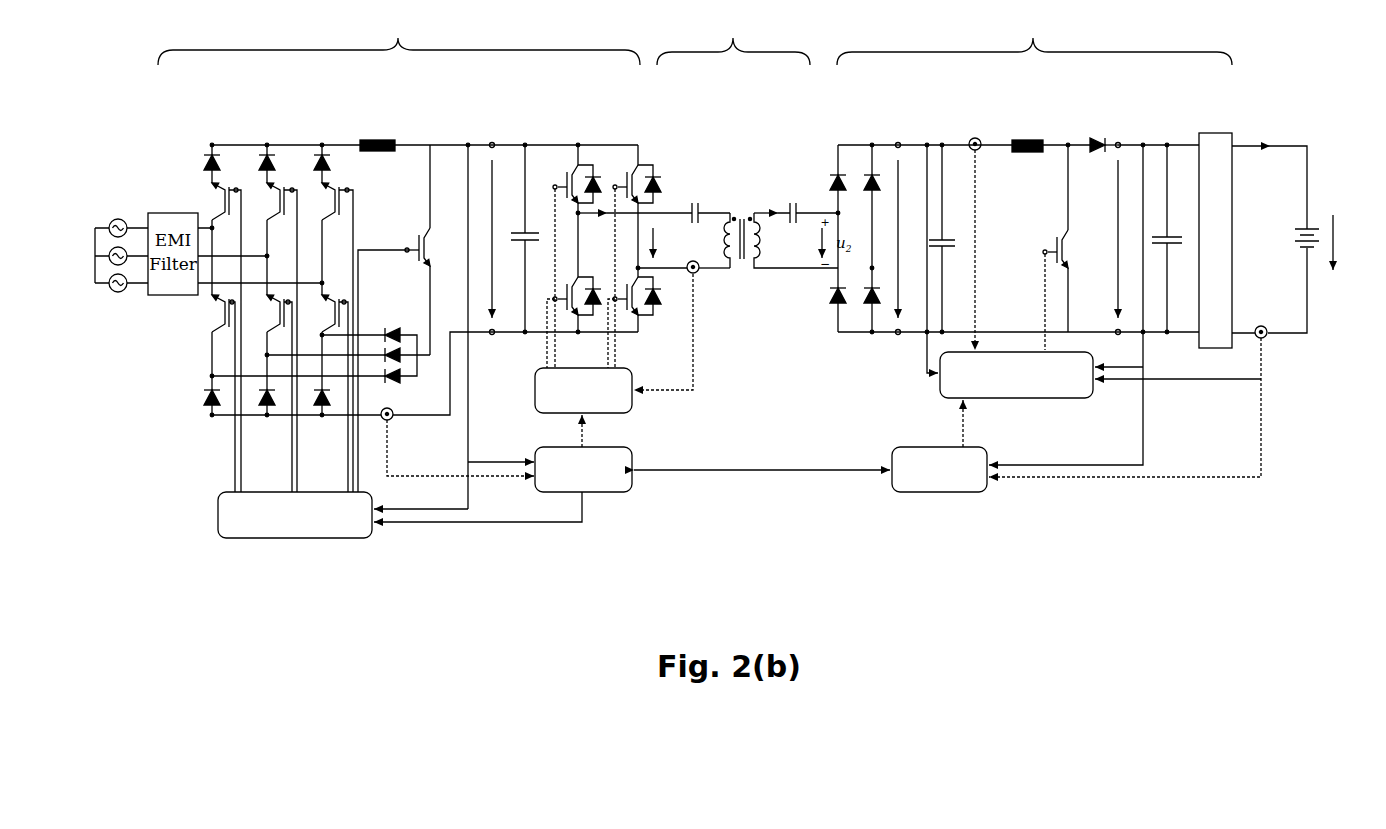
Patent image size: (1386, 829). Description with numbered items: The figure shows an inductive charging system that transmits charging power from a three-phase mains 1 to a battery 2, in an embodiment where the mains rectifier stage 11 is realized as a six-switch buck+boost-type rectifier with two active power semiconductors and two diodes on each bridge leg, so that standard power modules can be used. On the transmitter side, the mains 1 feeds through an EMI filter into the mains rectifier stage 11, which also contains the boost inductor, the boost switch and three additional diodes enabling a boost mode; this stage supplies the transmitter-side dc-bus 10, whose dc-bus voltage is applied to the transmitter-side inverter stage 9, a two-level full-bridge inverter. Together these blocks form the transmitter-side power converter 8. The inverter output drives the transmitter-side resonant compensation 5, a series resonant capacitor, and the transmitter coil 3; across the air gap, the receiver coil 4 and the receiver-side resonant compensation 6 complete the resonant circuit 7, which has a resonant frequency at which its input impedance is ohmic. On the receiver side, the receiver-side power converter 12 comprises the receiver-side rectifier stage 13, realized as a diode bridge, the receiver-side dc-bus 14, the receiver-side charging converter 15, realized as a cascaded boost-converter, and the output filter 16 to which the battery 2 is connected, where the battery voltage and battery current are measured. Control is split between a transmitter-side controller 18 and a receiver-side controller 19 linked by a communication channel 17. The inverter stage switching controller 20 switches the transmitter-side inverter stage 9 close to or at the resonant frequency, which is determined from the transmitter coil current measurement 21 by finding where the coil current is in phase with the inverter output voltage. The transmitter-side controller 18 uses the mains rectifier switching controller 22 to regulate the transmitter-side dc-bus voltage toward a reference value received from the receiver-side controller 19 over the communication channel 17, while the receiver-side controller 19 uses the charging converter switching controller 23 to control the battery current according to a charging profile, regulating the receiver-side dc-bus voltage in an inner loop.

The mains 1 is at (125, 216).
The battery 2 is at (1322, 290).
The transmitter coil 3 is at (726, 200).
The receiver coil 4 is at (754, 200).
The transmitter-side resonant compensation 5 is at (690, 192).
The receiver-side resonant compensation 6 is at (794, 195).
The resonant circuit 7 is at (733, 34).
The transmitter-side power converter 8 is at (399, 34).
The transmitter-side inverter stage 9 is at (611, 137).
The transmitter-side dc-bus 10 is at (531, 137).
The mains rectifier stage 11 is at (333, 137).
The receiver-side power converter 12 is at (1034, 34).
The receiver-side rectifier stage 13 is at (851, 137).
The receiver-side dc-bus 14 is at (903, 137).
The receiver-side charging converter 15 is at (1065, 135).
The output filter 16 is at (1180, 137).
The communication channel 17 is at (748, 478).
The transmitter-side controller 18 is at (625, 500).
The receiver-side controller 19 is at (888, 492).
The inverter stage switching controller 20 is at (635, 410).
The transmitter coil current measurement 21 is at (700, 296).
The mains rectifier switching controller 22 is at (322, 548).
The charging converter switching controller 23 is at (925, 388).